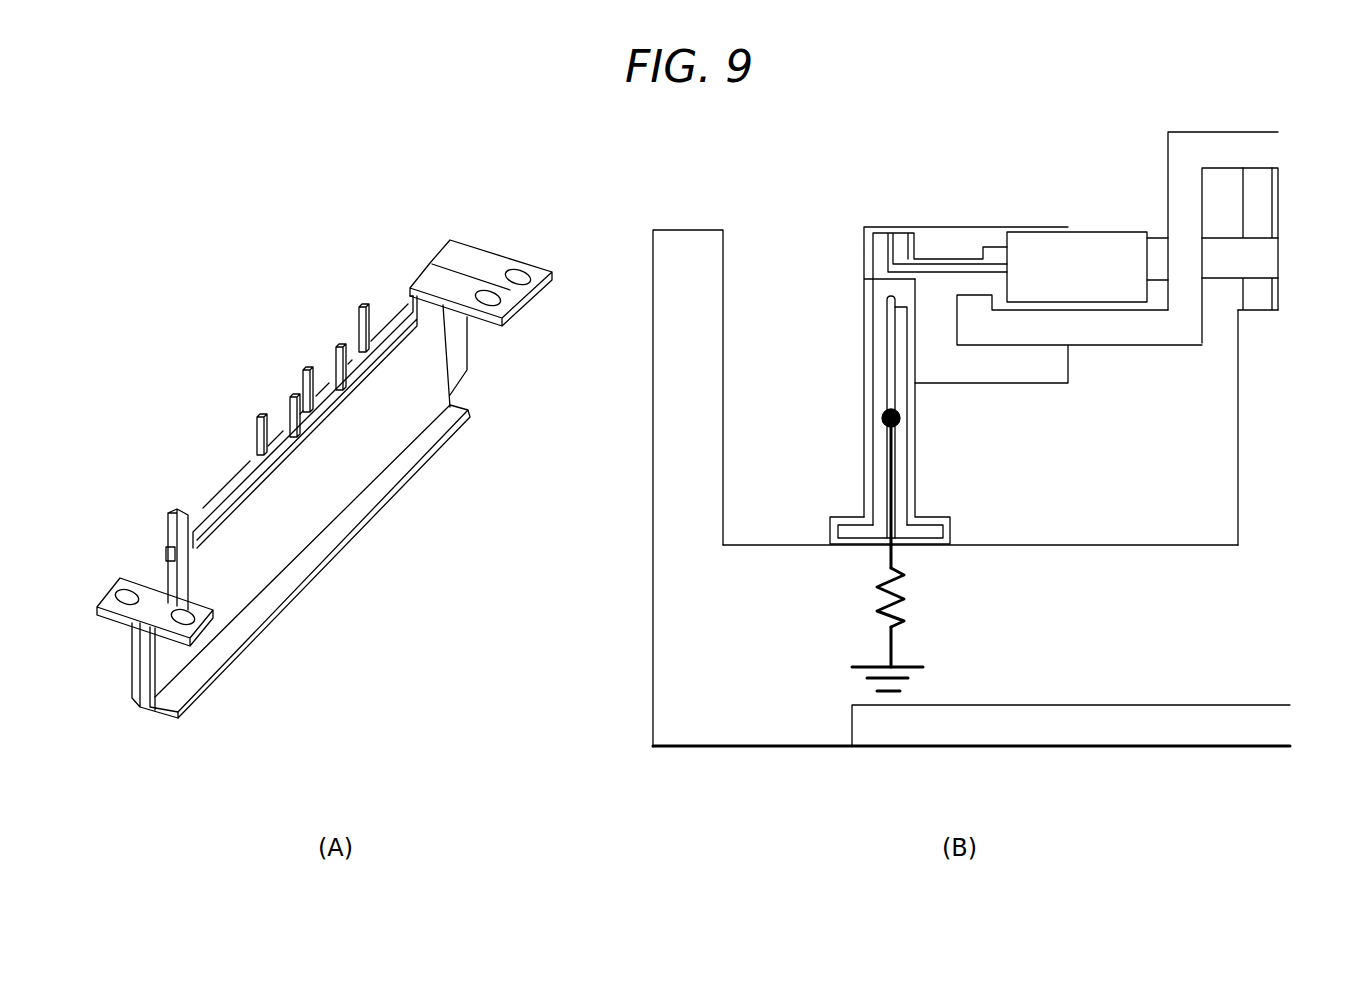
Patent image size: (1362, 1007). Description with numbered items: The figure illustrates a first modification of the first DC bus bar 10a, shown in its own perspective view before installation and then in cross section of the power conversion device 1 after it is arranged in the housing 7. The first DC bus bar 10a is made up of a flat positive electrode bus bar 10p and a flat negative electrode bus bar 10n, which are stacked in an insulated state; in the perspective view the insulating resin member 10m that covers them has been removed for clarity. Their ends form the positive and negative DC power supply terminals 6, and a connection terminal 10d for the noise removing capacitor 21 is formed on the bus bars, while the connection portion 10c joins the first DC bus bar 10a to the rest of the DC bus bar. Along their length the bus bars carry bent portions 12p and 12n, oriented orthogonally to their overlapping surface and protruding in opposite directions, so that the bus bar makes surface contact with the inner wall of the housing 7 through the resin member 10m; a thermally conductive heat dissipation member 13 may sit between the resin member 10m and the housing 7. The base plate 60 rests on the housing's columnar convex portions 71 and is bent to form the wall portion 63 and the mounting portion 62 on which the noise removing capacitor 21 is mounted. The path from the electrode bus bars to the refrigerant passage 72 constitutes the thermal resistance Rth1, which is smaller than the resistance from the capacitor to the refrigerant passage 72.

The power conversion device 1 is at (664, 134).
The DC power supply terminals 6 is at (128, 641).
The housing 7 is at (971, 525).
The first DC bus bar 10a is at (626, 337).
The connection portion 10c is at (481, 289).
The connection terminal 10d is at (264, 379).
The insulating resin member 10m is at (811, 402).
The negative electrode bus bar 10n is at (555, 364).
The positive electrode bus bar 10p is at (501, 421).
The bent portion 12n is at (596, 498).
The bent portion 12p is at (477, 631).
The heat dissipation member 13 is at (980, 525).
The noise removing capacitor 21 is at (1087, 218).
The base plate 60 is at (1192, 199).
The mounting portion 62 is at (1058, 361).
The wall portion 63 is at (1248, 427).
The convex portions 71 is at (1264, 239).
The refrigerant passage 72 is at (1071, 762).
The thermal resistance Rth1 is at (822, 550).